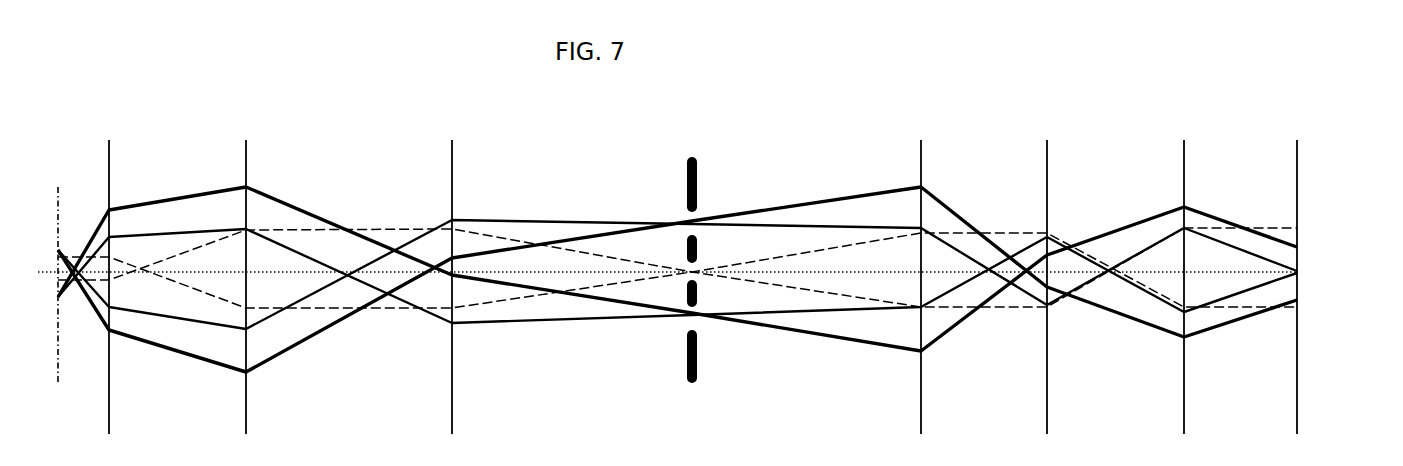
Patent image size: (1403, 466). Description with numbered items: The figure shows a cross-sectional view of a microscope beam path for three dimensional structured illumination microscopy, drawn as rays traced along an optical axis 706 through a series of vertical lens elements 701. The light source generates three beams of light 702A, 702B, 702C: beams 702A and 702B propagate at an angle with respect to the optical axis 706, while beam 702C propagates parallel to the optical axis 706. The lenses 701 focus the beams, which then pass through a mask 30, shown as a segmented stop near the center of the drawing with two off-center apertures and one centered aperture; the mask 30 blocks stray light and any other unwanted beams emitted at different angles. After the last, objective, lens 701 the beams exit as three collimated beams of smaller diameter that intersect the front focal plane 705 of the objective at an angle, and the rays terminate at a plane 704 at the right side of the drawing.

The lens 701 is at (647, 269).
The image plane 704 is at (1293, 274).
The front focal plane 705 is at (61, 269).
The optical axis 706 is at (283, 272).
The mask 30 is at (697, 172).
The beam of light 702A is at (1283, 255).
The beam of light 702B is at (1292, 290).
The beam of light 702C is at (1223, 268).